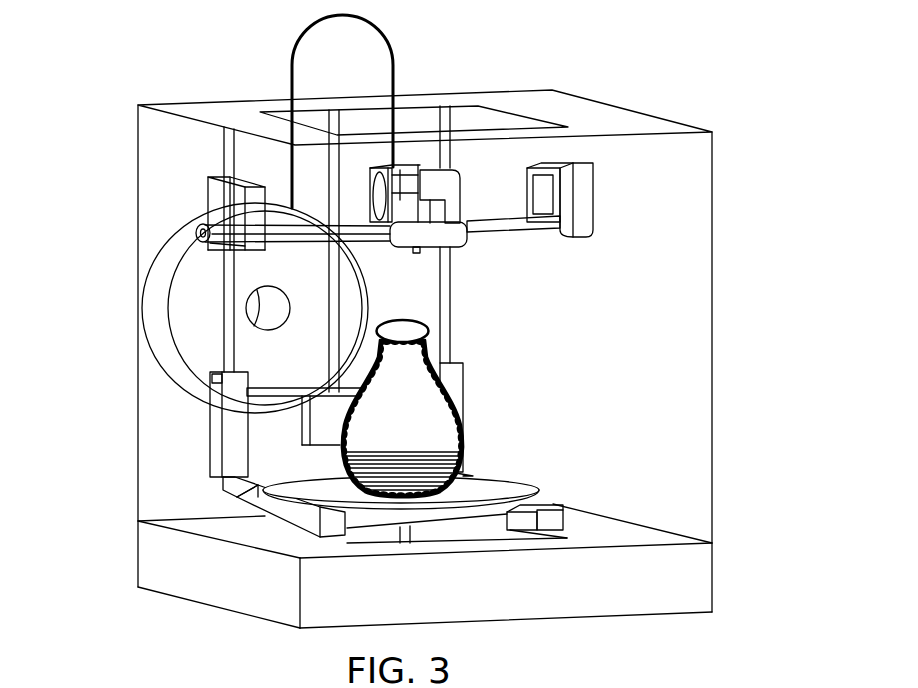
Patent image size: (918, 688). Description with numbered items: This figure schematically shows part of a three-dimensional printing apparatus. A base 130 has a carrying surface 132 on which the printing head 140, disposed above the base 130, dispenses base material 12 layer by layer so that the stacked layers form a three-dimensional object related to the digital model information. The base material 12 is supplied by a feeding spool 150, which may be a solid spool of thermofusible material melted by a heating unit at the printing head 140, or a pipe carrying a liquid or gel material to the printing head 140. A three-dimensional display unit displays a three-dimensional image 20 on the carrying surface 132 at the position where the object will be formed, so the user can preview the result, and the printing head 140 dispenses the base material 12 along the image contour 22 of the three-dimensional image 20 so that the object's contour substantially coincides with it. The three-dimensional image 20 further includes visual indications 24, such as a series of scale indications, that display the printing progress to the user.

The base material 12 is at (138, 523).
The 3-D image 20 is at (245, 408).
The image contour 22 is at (368, 370).
The visual indications 24 is at (342, 415).
The base 130 is at (517, 490).
The carrying surface 132 is at (493, 488).
The printing head 140 is at (416, 253).
The feeding spool 150 is at (398, 57).